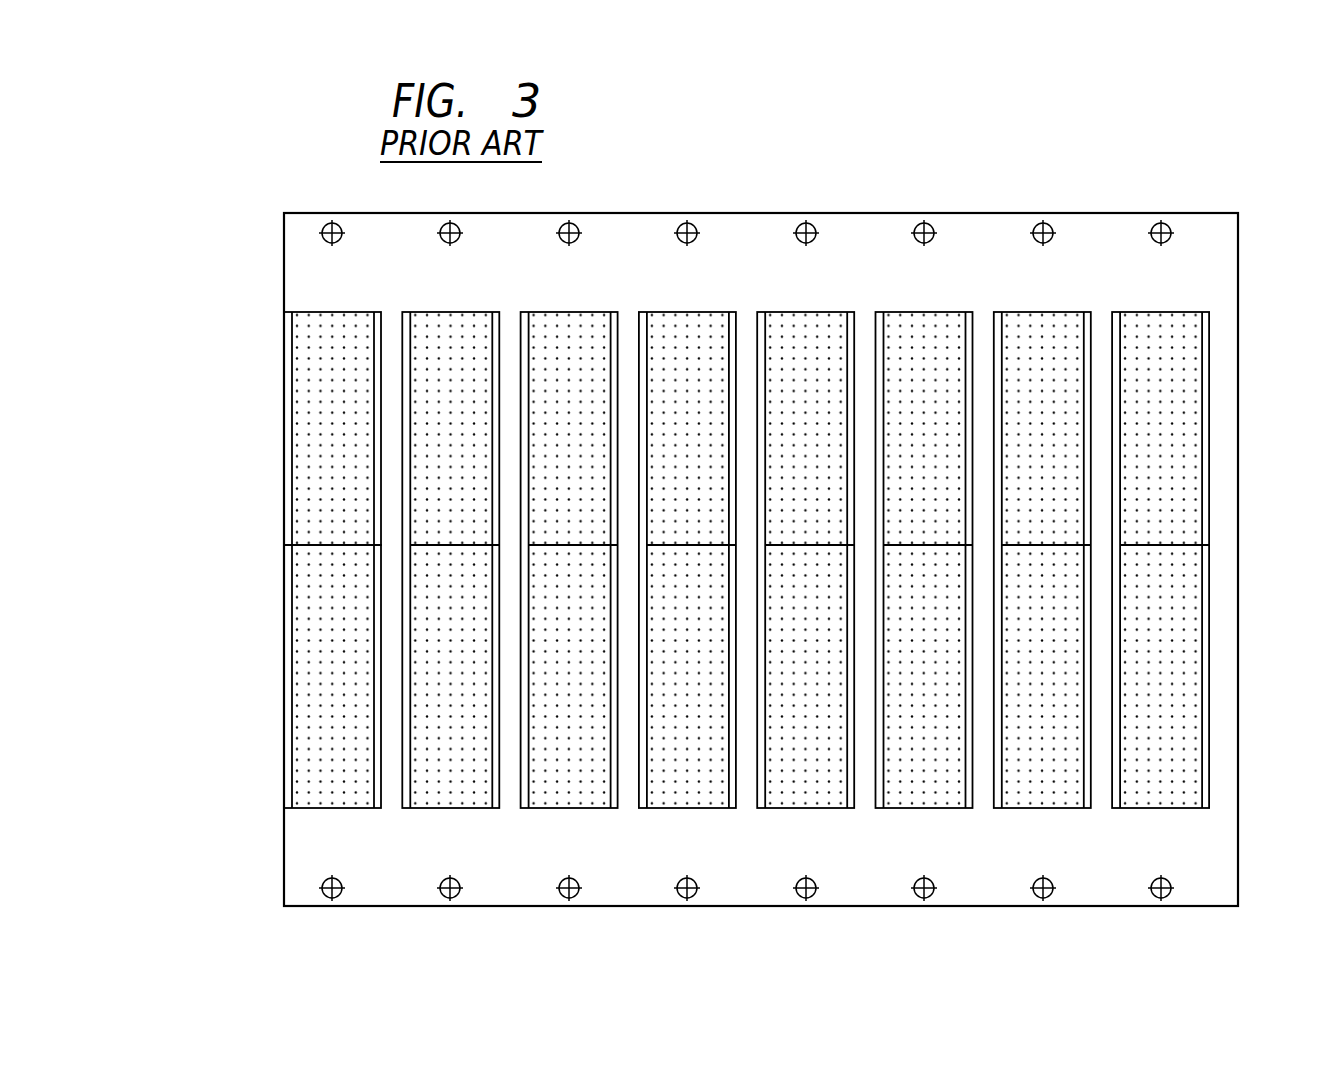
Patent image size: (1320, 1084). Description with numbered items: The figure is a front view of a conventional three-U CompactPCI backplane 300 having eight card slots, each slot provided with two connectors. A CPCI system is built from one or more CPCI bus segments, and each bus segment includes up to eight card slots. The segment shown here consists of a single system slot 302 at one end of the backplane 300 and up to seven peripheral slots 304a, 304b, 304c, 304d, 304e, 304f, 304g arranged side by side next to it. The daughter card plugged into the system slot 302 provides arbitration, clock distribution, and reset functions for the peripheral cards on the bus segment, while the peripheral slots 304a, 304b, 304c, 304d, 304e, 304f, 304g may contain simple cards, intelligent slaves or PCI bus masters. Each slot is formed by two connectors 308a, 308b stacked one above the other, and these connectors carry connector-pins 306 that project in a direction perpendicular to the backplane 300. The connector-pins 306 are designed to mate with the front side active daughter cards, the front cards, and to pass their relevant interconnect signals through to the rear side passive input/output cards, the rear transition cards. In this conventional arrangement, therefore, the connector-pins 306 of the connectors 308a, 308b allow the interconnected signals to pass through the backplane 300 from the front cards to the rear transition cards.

The backplane 300 is at (1238, 251).
The system slot 302 is at (276, 530).
The peripheral slot 304a is at (427, 808).
The peripheral slot 304b is at (545, 808).
The peripheral slot 304c is at (663, 808).
The peripheral slot 304d is at (781, 808).
The peripheral slot 304e is at (899, 808).
The peripheral slot 304f is at (1017, 808).
The peripheral slot 304g is at (1135, 808).
The connector-pins 306 is at (310, 591).
The connector 308a is at (290, 675).
The connector 308b is at (290, 441).